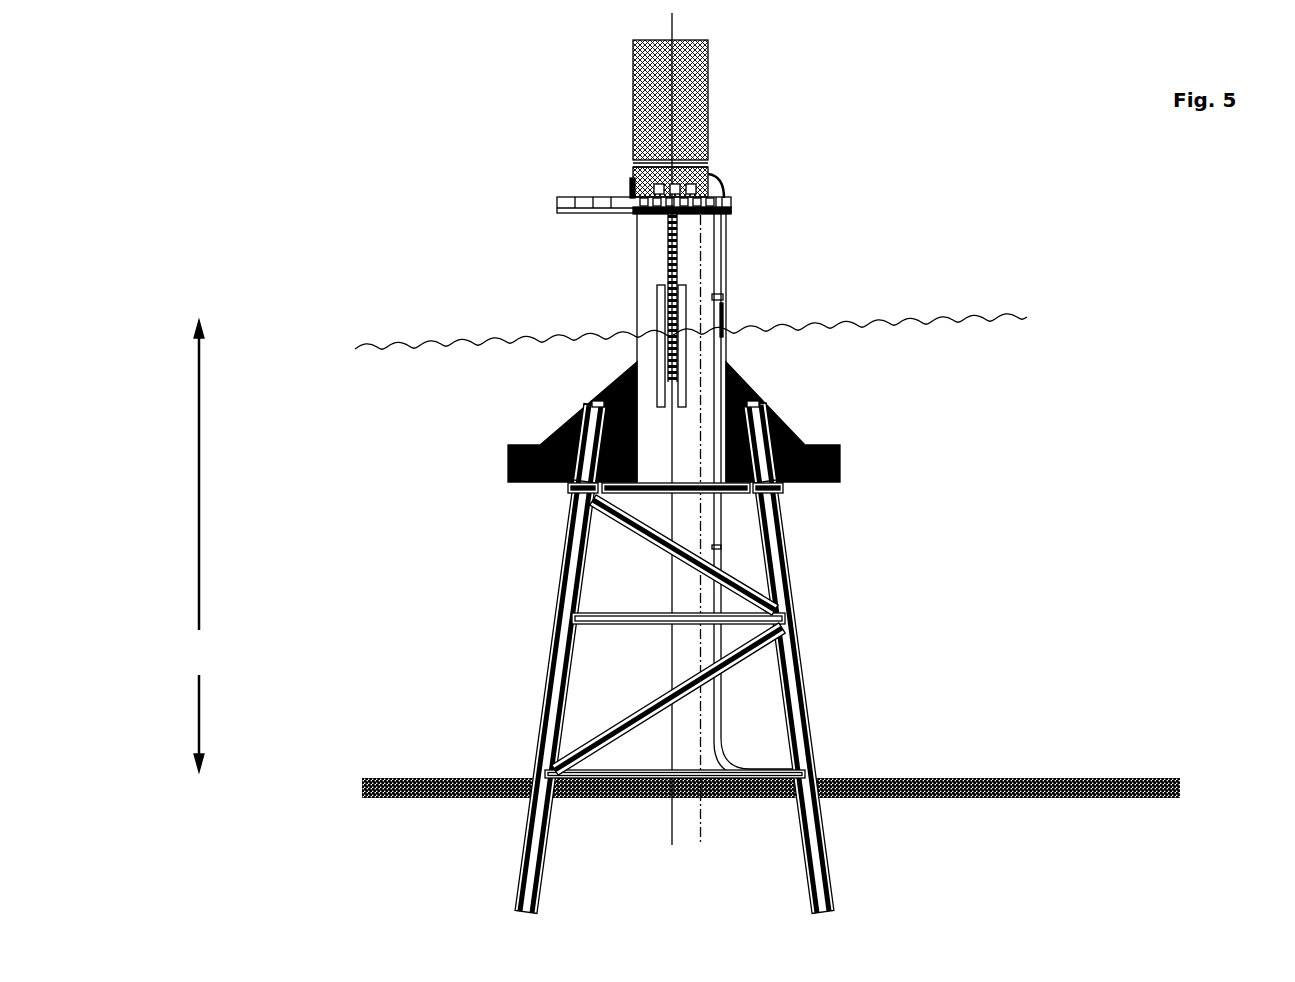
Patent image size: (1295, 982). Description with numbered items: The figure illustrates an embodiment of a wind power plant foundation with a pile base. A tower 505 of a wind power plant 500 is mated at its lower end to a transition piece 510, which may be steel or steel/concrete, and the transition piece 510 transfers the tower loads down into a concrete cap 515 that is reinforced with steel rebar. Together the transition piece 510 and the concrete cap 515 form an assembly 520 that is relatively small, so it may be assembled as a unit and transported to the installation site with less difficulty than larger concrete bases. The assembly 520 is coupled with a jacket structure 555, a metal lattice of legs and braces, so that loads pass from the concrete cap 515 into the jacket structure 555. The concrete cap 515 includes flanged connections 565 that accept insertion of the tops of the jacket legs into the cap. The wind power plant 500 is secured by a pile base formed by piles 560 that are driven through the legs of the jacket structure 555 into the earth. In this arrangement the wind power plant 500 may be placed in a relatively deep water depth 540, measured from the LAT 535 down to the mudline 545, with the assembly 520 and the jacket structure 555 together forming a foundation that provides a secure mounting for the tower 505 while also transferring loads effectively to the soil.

The wind power plant 500 is at (318, 153).
The tower 505 is at (712, 110).
The transition piece 510 is at (637, 271).
The concrete cap 515 is at (508, 471).
The assembly 520 is at (731, 402).
The LAT 535 is at (666, 347).
The water depth 540 is at (231, 546).
The mudline 545 is at (729, 786).
The jacket structure 555 is at (545, 719).
The piles 560 is at (596, 401).
The flanged connections 565 is at (783, 493).